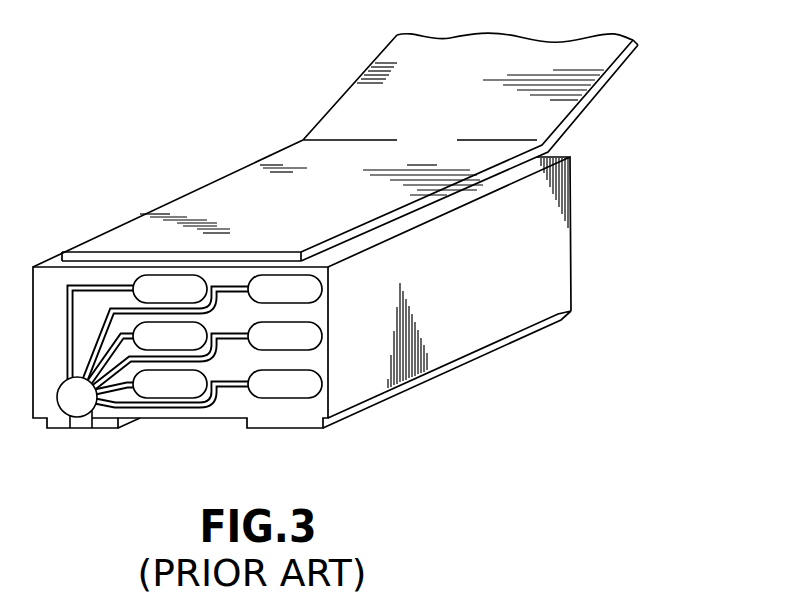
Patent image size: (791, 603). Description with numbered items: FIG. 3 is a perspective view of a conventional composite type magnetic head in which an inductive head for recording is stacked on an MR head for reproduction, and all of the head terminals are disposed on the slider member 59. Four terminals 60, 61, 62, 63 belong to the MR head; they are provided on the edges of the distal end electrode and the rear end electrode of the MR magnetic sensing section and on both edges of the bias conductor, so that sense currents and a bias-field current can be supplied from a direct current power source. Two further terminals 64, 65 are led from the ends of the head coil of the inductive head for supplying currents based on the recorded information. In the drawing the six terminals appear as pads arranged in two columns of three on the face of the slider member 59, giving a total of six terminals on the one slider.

The slider member 59 is at (445, 342).
The terminal 60 is at (163, 281).
The terminal 61 is at (150, 330).
The terminal 62 is at (168, 385).
The terminal 63 is at (277, 285).
The contact pad 64 is at (307, 342).
The terminal 65 is at (288, 390).